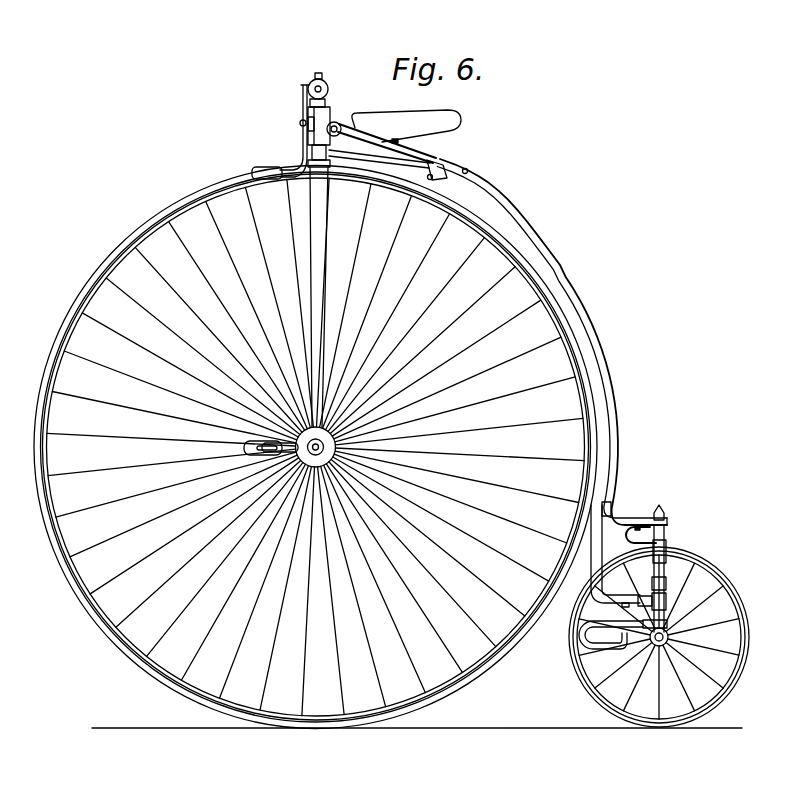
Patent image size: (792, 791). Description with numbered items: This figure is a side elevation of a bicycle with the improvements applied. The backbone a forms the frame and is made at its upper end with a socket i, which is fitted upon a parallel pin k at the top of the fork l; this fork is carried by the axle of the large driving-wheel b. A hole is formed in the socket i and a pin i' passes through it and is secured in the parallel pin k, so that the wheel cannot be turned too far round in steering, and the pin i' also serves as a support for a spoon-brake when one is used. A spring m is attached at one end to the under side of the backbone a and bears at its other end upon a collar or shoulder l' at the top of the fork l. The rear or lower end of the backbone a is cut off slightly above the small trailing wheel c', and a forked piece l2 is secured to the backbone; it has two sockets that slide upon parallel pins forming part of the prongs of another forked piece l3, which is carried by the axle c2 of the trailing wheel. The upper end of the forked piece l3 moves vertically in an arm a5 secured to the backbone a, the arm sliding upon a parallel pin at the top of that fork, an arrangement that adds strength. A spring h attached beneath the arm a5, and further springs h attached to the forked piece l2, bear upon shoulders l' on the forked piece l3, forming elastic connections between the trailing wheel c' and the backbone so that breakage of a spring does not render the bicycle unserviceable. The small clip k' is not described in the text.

The backbone a is at (350, 444).
The arm a5 is at (648, 513).
The driving-wheel b is at (316, 447).
The trailing wheel c' is at (665, 637).
The axle of the trailing wheel c2 is at (660, 647).
The spring h is at (584, 630).
The socket i is at (325, 120).
The pin i' is at (283, 132).
The parallel pin k is at (399, 145).
The spring clip k' is at (657, 533).
The fork l is at (319, 297).
The collar or shoulder l' is at (493, 411).
The forked piece l2 is at (627, 558).
The forked piece l3 is at (668, 560).
The spring m is at (389, 164).